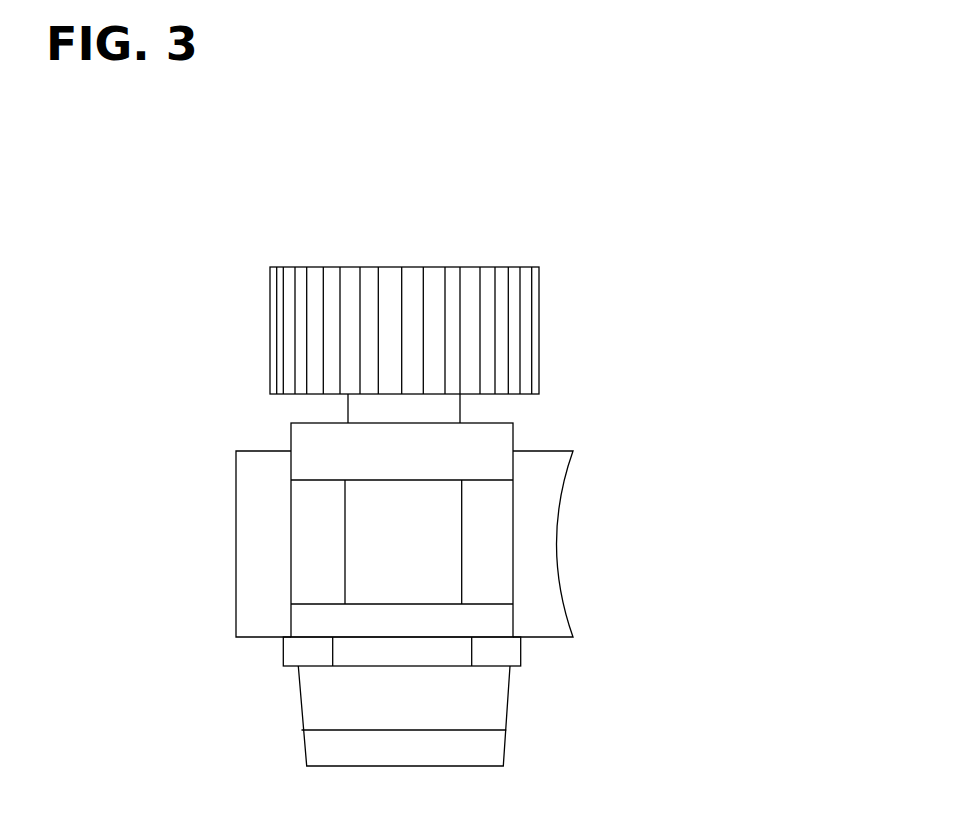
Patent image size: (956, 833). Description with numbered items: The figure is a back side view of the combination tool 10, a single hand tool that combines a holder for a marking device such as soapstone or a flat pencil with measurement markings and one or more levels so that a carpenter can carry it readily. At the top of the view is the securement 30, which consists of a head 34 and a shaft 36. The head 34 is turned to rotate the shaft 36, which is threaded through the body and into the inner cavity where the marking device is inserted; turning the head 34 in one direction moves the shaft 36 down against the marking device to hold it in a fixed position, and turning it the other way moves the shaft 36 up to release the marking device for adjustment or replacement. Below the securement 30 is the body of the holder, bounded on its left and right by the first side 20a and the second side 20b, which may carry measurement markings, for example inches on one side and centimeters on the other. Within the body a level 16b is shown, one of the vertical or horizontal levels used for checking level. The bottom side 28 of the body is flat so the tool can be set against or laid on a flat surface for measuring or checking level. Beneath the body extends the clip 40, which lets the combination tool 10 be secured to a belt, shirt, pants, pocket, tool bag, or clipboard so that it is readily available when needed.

The combination tool 10 is at (695, 213).
The securement 30 is at (309, 275).
The head 34 is at (271, 344).
The shaft 36 is at (348, 412).
The level 16b is at (338, 549).
The first side 20a is at (230, 543).
The second side 20b is at (552, 562).
The bottom side 28 is at (548, 637).
The clip 40 is at (302, 732).